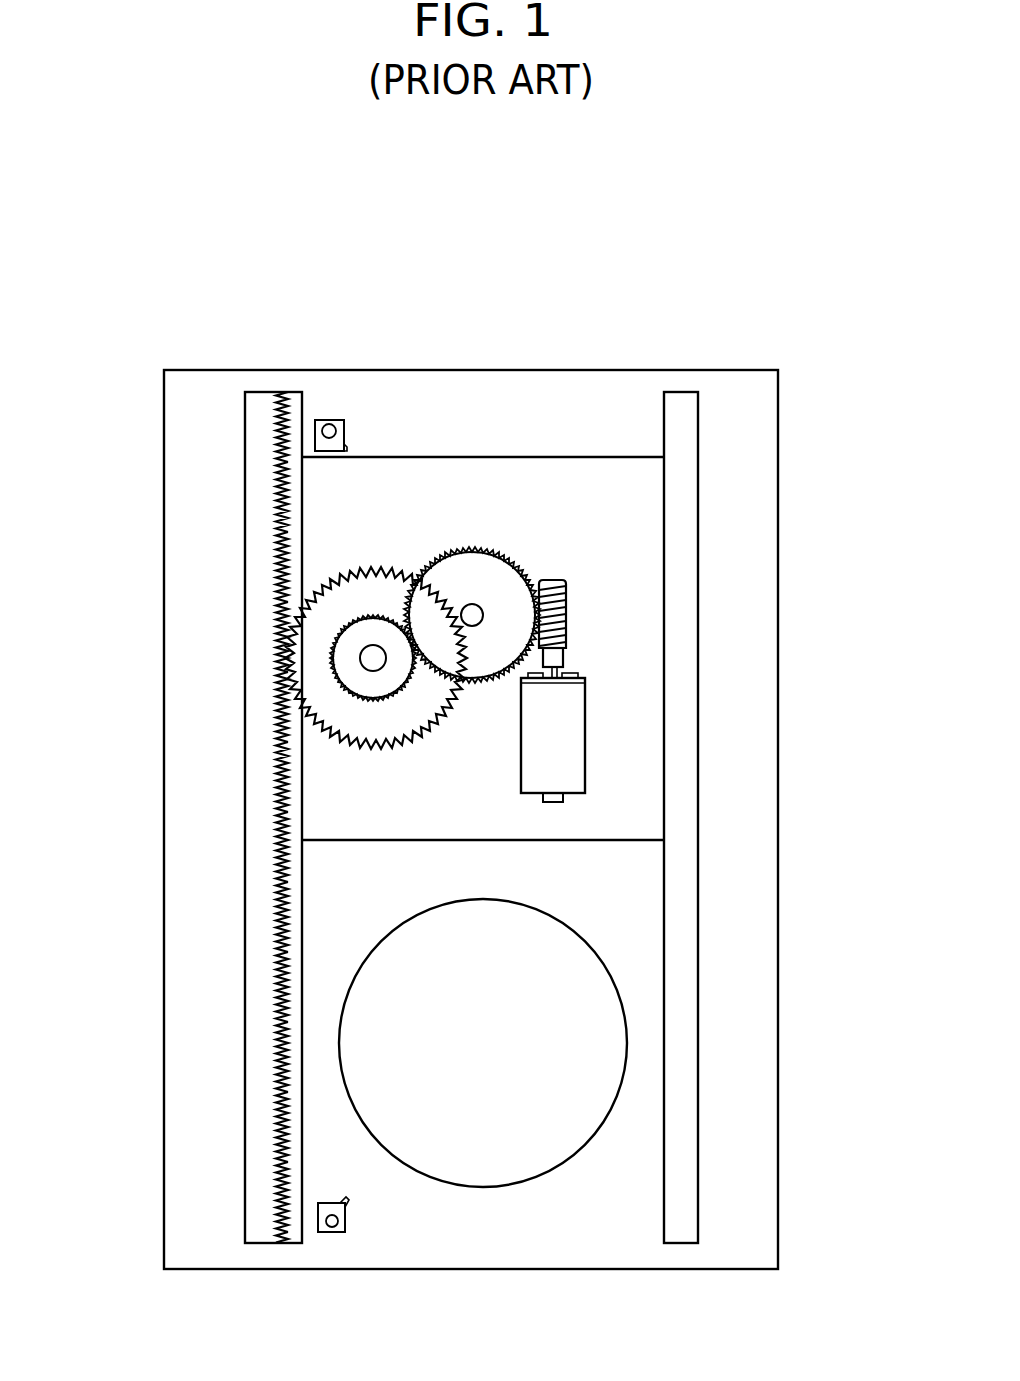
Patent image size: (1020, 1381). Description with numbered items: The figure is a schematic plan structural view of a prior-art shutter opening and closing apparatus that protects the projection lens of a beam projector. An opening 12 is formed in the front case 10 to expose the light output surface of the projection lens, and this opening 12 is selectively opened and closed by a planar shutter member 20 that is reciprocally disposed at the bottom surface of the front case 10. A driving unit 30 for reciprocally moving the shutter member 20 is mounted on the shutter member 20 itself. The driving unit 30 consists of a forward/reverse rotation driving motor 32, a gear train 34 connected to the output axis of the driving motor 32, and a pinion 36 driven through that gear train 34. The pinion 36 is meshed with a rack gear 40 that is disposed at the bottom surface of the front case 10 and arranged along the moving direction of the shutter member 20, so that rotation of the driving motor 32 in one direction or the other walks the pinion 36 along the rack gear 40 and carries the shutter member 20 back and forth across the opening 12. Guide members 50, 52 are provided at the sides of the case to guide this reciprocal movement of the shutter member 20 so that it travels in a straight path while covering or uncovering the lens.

The front case 10 is at (753, 460).
The opening 12 is at (528, 1148).
The shutter member 20 is at (435, 470).
The driving unit 30 is at (590, 625).
The forward/reverse rotation driving motor 32 is at (565, 742).
The gear train 34 is at (378, 562).
The pinion 36 is at (327, 702).
The rack gear 40 is at (272, 1043).
The guide member 50 is at (296, 1232).
The guide member 52 is at (680, 1177).